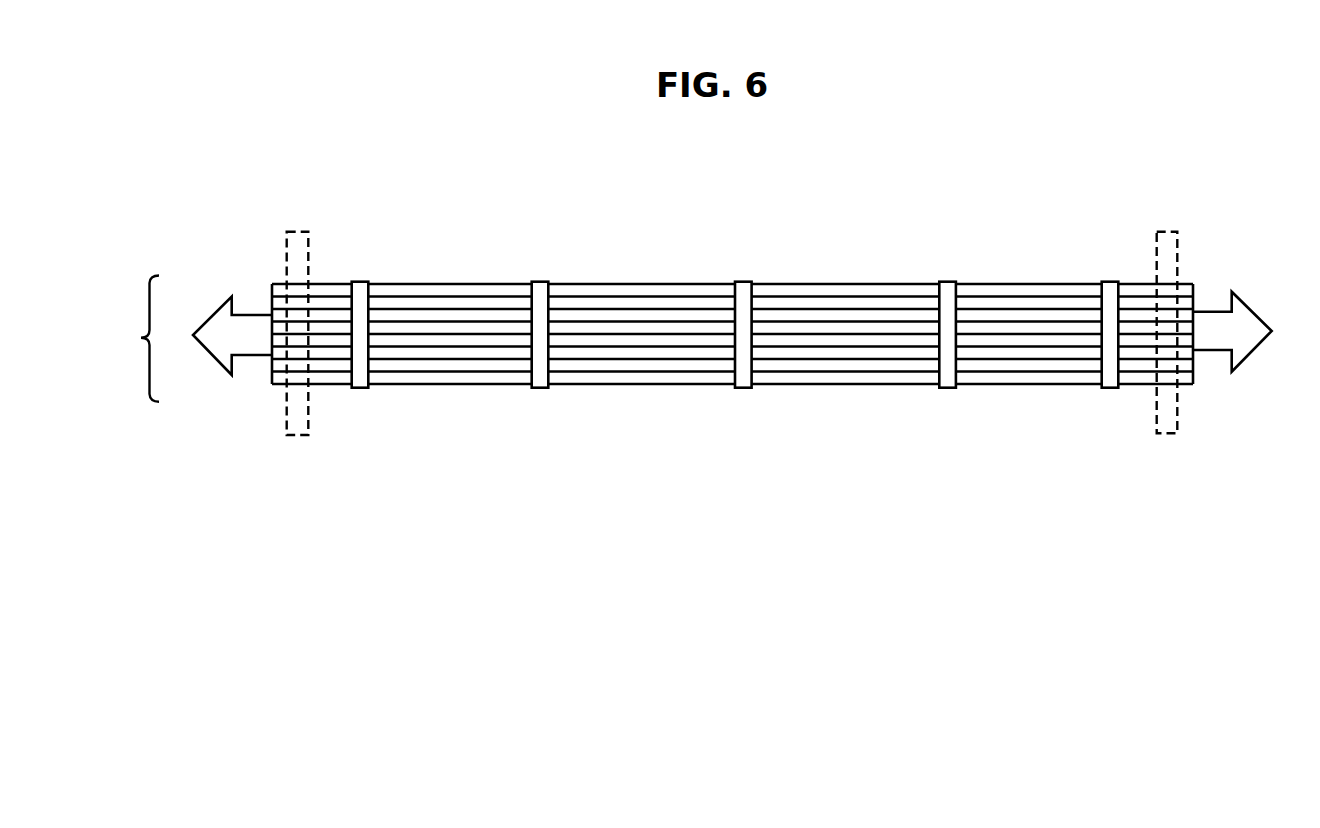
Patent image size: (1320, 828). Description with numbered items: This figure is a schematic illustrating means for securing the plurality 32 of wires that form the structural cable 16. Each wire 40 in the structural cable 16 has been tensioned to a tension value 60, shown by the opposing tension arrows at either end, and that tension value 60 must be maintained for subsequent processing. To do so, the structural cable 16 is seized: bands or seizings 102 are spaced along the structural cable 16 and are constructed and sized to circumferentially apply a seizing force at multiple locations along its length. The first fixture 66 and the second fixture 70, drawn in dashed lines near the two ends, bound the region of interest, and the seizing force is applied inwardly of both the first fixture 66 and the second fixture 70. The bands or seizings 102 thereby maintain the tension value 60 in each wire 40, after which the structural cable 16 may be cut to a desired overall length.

The structural cable 16 is at (732, 450).
The plurality of wires 32 is at (133, 339).
The wire 40 is at (443, 380).
The tension value 60 is at (230, 295).
The first fixture 66 is at (295, 437).
The second fixture 70 is at (1163, 435).
The bands or seizings 102 is at (362, 281).